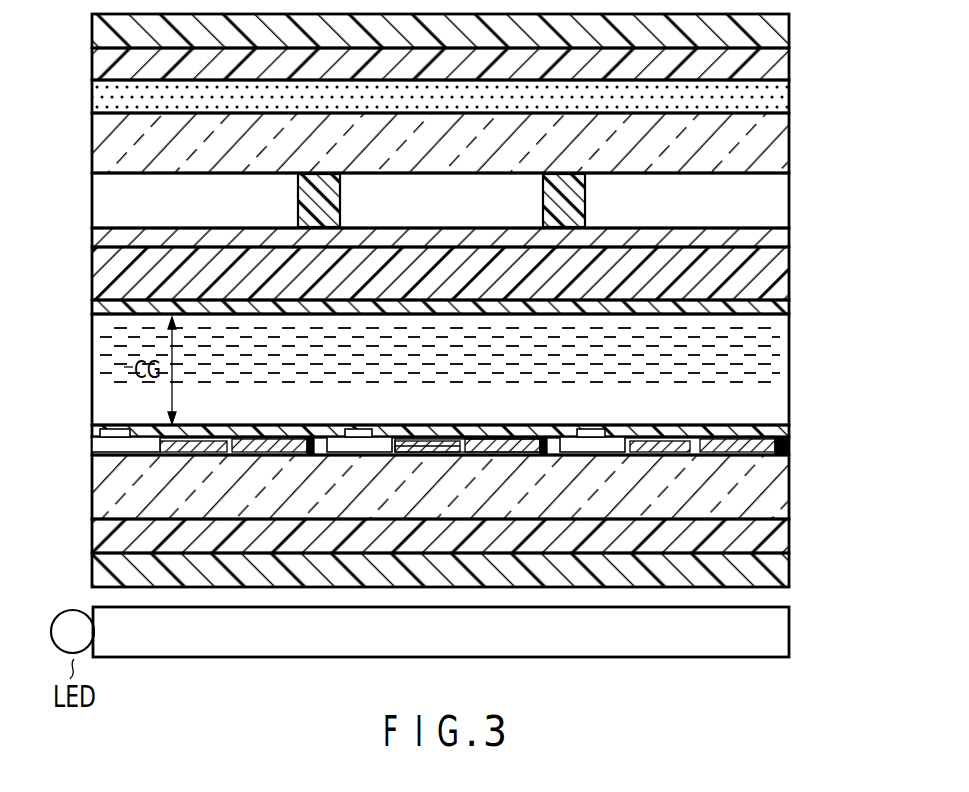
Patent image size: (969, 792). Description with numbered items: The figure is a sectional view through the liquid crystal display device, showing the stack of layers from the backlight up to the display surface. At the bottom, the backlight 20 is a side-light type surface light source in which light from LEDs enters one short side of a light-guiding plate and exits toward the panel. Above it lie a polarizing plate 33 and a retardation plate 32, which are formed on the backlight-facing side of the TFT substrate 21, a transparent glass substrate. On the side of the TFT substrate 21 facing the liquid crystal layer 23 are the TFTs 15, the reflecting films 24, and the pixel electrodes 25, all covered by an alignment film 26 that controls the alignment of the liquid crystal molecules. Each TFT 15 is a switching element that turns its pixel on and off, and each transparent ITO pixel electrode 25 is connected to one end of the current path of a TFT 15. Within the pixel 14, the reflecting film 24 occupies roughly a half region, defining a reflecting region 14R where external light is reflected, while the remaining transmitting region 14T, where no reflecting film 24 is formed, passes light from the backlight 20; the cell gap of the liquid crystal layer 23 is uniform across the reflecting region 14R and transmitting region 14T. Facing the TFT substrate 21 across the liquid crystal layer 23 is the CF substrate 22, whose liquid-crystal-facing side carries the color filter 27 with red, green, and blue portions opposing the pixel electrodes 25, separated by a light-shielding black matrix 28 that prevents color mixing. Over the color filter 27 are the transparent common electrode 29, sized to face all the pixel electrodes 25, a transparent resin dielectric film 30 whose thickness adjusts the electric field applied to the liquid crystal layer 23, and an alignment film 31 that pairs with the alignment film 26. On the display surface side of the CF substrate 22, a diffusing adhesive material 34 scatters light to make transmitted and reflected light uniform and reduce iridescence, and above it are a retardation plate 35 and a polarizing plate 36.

The polarizing plate 36 is at (790, 27).
The retardation plate 35 is at (790, 58).
The diffusing adhesive material 34 is at (790, 93).
The light-shielding film (black matrix) 28 is at (570, 173).
The color filter substrate (CF substrate) 22 is at (790, 157).
The color filter 27 is at (790, 202).
The common electrode 29 is at (790, 236).
The dielectric film 30 is at (790, 280).
The alignment film 31 is at (790, 305).
The liquid crystal layer 23 is at (790, 368).
The TFT 15 is at (633, 424).
The alignment film 26 is at (783, 434).
The pixel electrode 25 is at (770, 444).
The reflecting film 24 is at (665, 452).
The TFT substrate 21 is at (790, 502).
The retardation plate 32 is at (790, 538).
The polarizing plate 33 is at (790, 568).
The backlight 20 is at (790, 632).
The reflecting region 14R is at (458, 456).
The transmitting region 14T is at (538, 456).
The pixel 14 is at (526, 497).